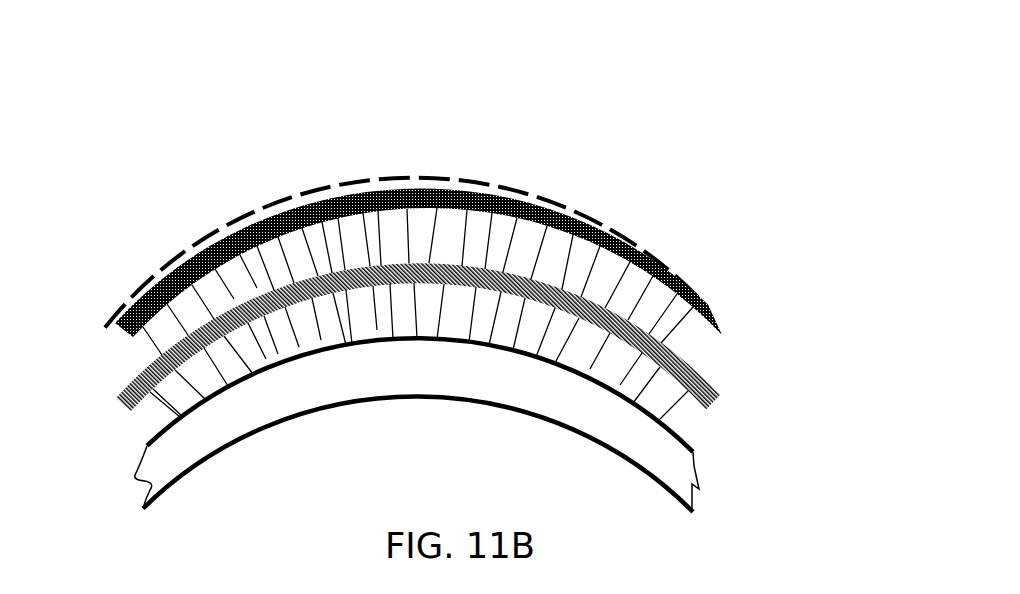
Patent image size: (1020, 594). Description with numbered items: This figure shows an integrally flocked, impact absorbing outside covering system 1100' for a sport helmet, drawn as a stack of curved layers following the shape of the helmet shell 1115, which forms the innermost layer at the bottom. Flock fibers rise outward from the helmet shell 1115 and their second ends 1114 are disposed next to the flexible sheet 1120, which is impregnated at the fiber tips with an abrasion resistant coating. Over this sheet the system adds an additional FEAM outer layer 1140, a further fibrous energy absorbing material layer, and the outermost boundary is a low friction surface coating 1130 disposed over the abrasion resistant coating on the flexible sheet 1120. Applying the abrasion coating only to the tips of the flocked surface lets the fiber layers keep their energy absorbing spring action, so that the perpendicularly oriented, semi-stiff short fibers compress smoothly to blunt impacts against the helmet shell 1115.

The integrally flocked, impact absorbing outside covering system 1100' is at (454, 279).
The low friction surface coating 1130 is at (600, 199).
The flexible sheet 1120 is at (720, 324).
The second ends 1114 is at (142, 340).
The FEAM outer layer 1140 is at (717, 342).
The helmet shell 1115 is at (693, 453).